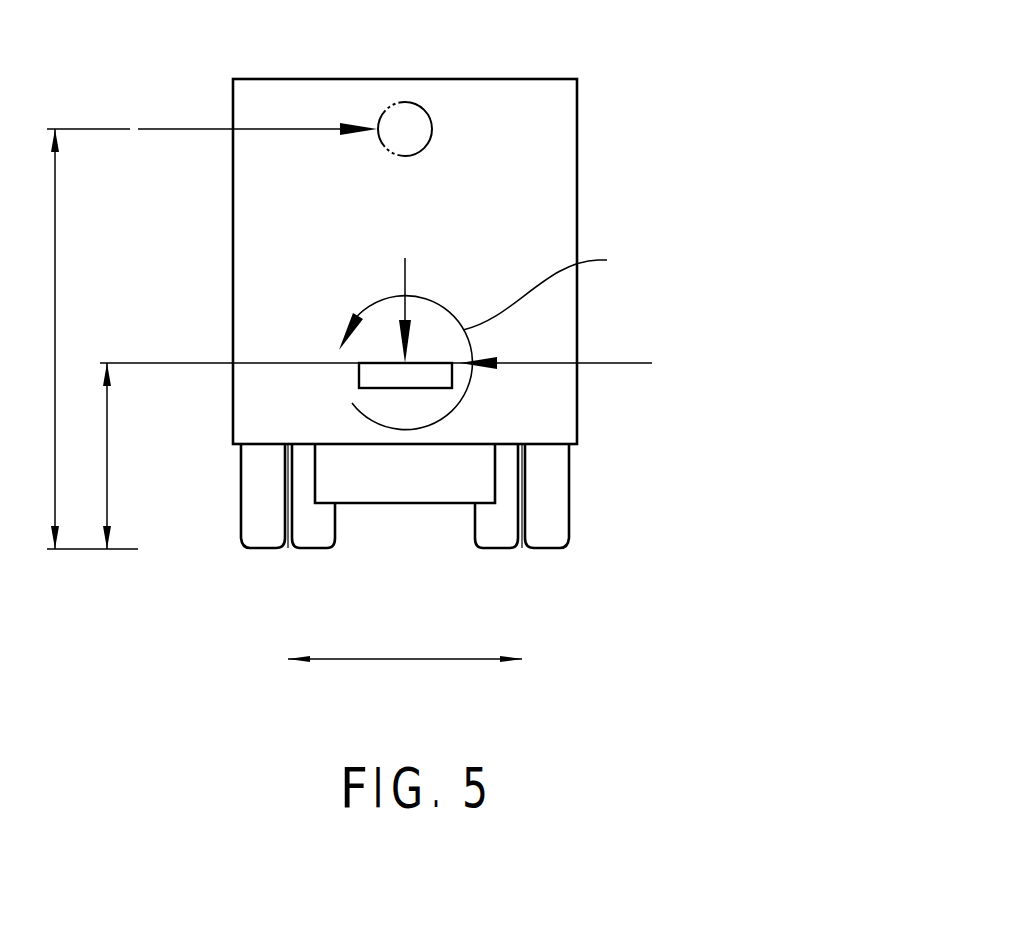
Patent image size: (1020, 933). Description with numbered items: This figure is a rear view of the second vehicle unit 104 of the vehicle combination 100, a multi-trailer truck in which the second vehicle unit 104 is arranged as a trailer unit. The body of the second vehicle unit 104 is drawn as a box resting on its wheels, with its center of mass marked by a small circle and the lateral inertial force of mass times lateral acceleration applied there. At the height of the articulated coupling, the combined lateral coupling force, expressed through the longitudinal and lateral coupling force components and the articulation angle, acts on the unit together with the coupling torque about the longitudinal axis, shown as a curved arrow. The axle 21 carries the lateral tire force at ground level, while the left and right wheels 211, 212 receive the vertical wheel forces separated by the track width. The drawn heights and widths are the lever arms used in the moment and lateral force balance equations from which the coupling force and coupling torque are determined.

The vehicle combination 100 is at (639, 51).
The second vehicle unit 104 is at (577, 145).
The rear axle 21 is at (403, 549).
The left rear wheel 211 is at (288, 667).
The right rear wheel 212 is at (522, 667).